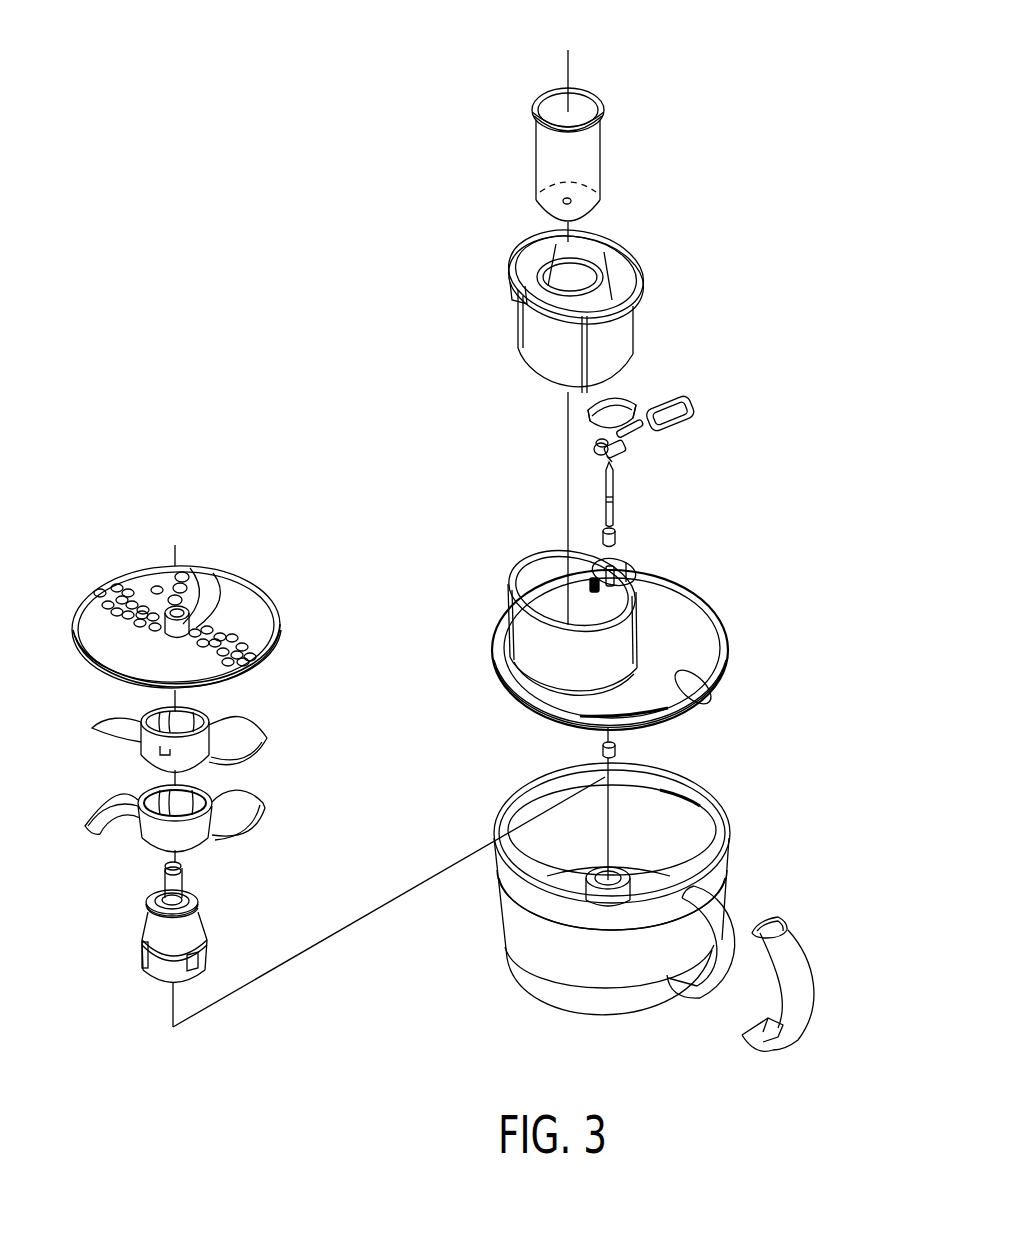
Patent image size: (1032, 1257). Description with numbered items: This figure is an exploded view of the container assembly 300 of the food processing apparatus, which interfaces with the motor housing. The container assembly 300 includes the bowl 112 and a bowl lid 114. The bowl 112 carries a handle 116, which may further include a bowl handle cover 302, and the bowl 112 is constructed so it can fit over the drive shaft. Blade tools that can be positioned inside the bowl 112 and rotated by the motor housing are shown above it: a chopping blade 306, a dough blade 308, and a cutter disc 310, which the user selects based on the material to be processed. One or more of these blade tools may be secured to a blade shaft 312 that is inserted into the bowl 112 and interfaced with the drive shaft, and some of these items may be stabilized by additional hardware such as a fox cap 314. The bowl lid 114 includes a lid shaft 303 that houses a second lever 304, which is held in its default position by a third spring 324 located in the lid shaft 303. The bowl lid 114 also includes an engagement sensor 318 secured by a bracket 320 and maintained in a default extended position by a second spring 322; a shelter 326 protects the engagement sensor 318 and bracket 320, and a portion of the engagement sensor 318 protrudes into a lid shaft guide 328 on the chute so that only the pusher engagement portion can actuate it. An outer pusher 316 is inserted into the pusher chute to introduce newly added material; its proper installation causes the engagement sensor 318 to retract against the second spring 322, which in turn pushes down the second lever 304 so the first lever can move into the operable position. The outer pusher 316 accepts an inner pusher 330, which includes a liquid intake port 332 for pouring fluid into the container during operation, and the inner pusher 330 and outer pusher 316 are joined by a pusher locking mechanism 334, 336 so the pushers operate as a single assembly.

The container assembly 300 is at (778, 40).
The inner pusher 330 is at (592, 172).
The pusher locking mechanism 336 is at (536, 130).
The liquid intake port 332 is at (584, 203).
The outer pusher 316 is at (626, 327).
The pusher locking mechanism 334 is at (526, 296).
The shelter 326 is at (624, 408).
The bracket 320 is at (690, 405).
The second spring 322 is at (662, 428).
The engagement sensor 318 is at (590, 452).
The second lever 304 is at (614, 485).
The third spring 324 is at (617, 538).
The bowl lid 114 is at (690, 630).
The lid shaft guide 328 is at (545, 578).
The lid shaft 303 is at (640, 575).
The fox cap 314 is at (618, 752).
The bowl 112 is at (750, 832).
The handle 116 is at (688, 1000).
The bowl handle cover 302 is at (780, 920).
The cutter disc 310 is at (245, 613).
The dough blade 308 is at (220, 733).
The chopping blade 306 is at (220, 803).
The blade shaft 312 is at (198, 920).